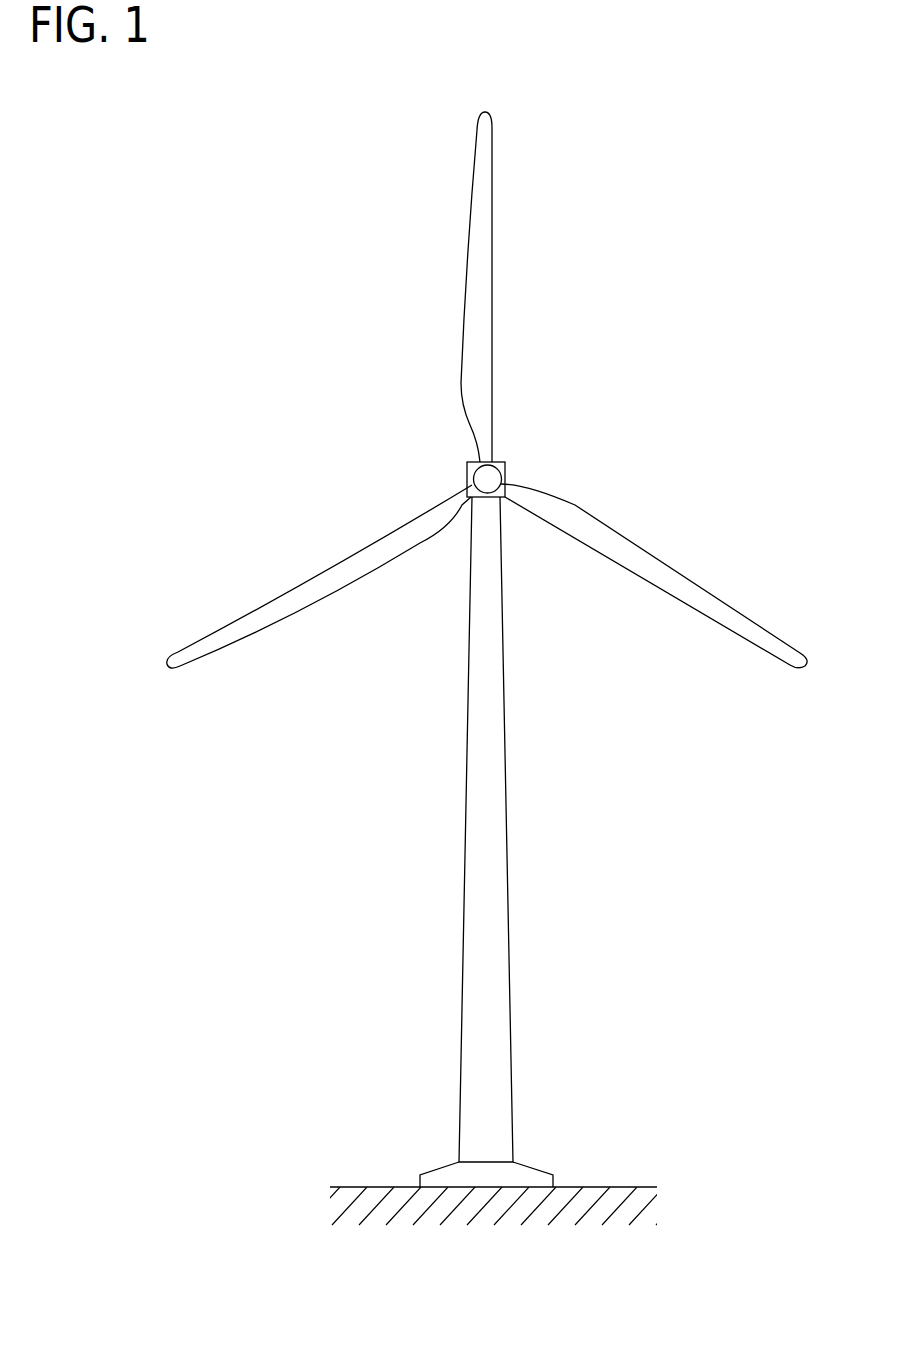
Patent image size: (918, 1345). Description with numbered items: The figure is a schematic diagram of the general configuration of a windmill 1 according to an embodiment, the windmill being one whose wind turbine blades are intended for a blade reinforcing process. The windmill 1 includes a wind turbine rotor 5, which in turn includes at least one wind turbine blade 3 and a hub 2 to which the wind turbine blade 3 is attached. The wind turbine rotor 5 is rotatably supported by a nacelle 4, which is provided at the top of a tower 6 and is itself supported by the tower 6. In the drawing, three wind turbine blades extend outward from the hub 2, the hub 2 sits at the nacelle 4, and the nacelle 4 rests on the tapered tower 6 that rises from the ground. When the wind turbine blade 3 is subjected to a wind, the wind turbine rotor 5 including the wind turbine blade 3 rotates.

The windmill 1 is at (670, 326).
The hub 2 is at (490, 479).
The wind turbine blade 3 is at (717, 603).
The nacelle 4 is at (500, 462).
The wind turbine rotor 5 is at (449, 465).
The tower 6 is at (500, 943).